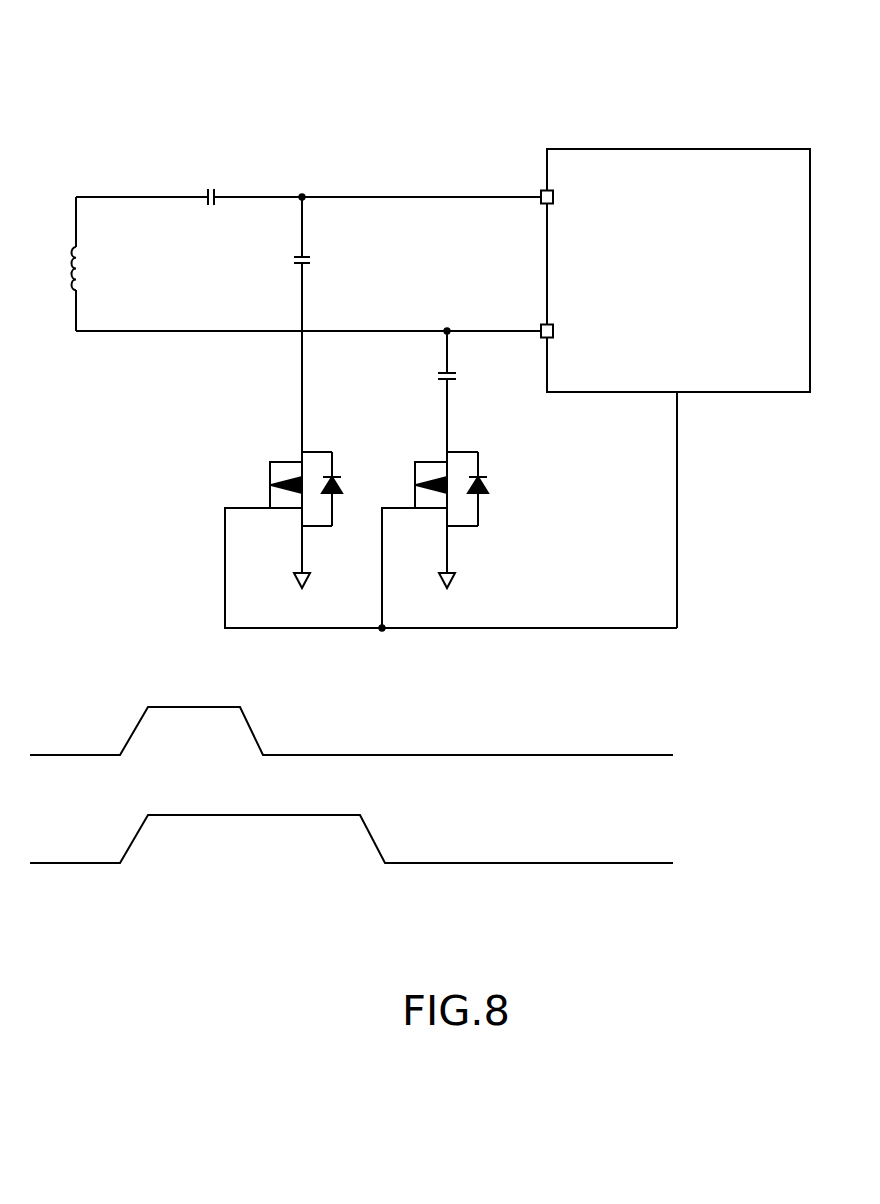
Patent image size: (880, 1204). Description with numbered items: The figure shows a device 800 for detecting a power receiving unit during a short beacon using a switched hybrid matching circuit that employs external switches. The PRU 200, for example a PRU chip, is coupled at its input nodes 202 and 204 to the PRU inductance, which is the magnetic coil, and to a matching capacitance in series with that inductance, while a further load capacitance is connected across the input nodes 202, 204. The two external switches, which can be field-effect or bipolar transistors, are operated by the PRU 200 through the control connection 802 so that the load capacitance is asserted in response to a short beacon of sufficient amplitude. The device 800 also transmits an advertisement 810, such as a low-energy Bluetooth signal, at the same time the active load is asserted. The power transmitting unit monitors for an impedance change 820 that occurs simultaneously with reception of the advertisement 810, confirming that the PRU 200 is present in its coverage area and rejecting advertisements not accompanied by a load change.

The device 800 is at (164, 101).
The PRU 200 is at (705, 294).
The input node 202 is at (553, 197).
The input node 204 is at (553, 331).
The switch control signal line 802 is at (677, 447).
The advertisement 810 is at (334, 731).
The impedance change 820 is at (408, 842).